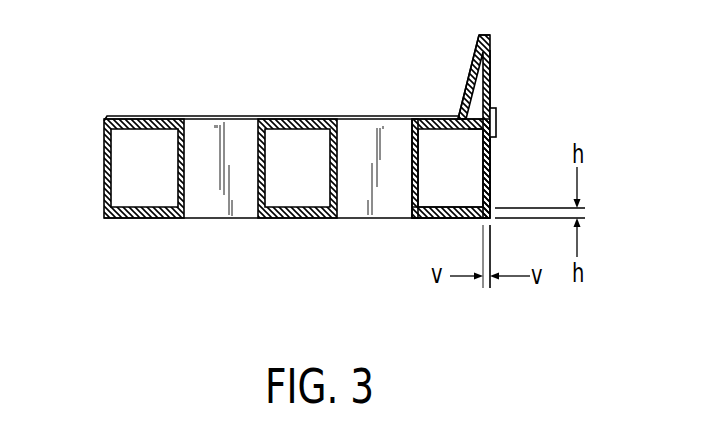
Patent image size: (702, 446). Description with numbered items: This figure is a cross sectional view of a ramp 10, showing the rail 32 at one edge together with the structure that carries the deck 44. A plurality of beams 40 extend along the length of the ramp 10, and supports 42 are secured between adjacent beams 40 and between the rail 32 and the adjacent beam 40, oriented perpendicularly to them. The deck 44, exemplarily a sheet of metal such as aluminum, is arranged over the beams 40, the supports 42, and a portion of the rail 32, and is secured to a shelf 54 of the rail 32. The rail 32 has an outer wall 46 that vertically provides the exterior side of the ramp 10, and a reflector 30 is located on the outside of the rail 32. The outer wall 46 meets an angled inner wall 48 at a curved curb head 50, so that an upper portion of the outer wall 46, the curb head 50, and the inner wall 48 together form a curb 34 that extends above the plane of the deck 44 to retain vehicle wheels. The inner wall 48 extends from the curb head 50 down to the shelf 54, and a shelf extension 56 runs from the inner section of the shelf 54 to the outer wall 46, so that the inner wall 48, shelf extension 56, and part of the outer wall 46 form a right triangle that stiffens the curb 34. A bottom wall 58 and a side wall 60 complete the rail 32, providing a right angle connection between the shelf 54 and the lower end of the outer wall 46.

The ramp 10 is at (325, 75).
The reflector 30 is at (496, 118).
The rail 32 is at (513, 148).
The curb 34 is at (501, 74).
The beam 40 is at (103, 170).
The support 42 is at (390, 148).
The deck 44 is at (209, 117).
The outer wall 46 is at (496, 93).
The inner wall 48 is at (476, 56).
The curb head 50 is at (485, 34).
The shelf 54 is at (442, 130).
The shelf extension 56 is at (473, 130).
The bottom wall 58 is at (447, 219).
The side wall 60 is at (411, 158).